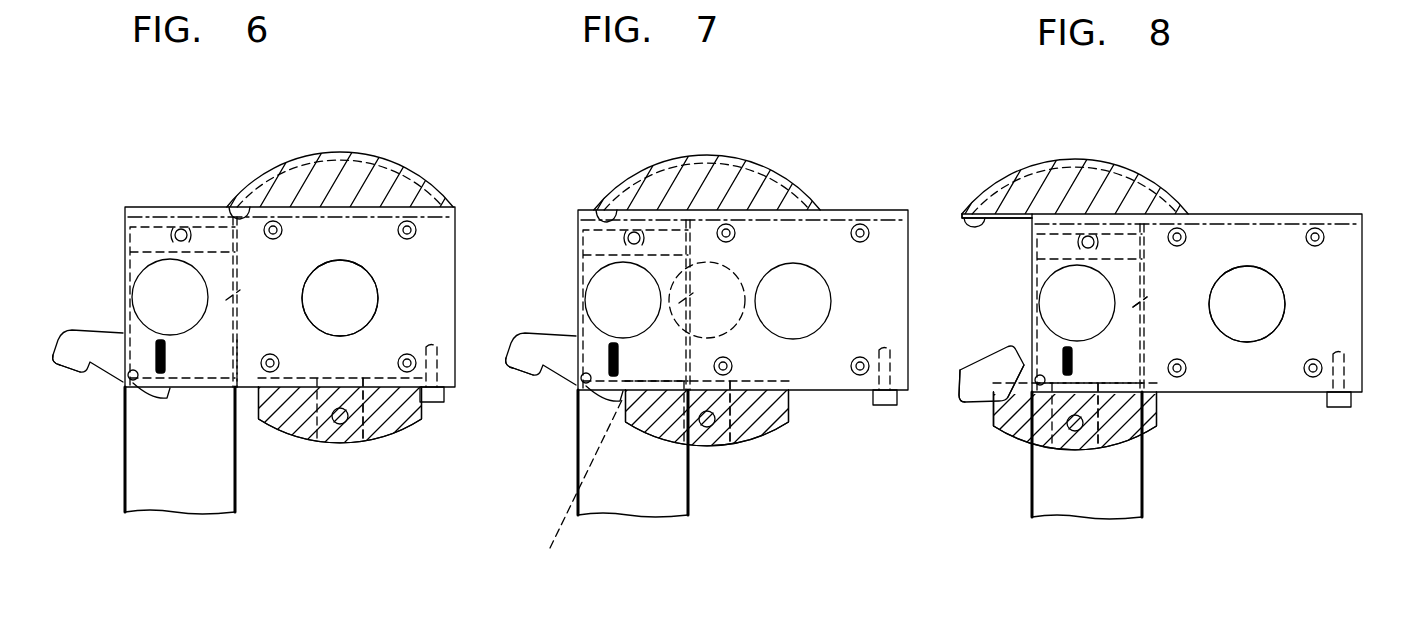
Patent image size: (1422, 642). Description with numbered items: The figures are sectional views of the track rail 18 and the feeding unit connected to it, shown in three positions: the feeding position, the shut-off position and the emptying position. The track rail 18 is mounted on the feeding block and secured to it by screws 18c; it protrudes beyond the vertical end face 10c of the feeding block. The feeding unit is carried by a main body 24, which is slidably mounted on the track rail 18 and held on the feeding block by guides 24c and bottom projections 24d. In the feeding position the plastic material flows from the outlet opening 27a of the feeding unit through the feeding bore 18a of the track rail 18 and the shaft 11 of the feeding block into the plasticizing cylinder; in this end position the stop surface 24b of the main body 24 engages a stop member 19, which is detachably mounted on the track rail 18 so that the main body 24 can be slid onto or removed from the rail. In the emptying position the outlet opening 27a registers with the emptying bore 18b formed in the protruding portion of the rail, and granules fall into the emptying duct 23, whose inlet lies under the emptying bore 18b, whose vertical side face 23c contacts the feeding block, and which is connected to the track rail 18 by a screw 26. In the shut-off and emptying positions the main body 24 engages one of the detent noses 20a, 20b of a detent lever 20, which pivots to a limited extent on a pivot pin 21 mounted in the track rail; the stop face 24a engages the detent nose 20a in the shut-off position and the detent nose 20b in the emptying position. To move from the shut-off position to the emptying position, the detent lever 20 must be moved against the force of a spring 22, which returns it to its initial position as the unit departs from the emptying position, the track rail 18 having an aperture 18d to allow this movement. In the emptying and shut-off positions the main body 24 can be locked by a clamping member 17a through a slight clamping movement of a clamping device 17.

In FIG. 8, the vertical end face 10c is at (1179, 325).
In FIG. 6, the shaft 11 is at (338, 295).
In FIG. 8, the shaft 11 is at (1257, 239).
In FIG. 6, the clamping device 17 is at (335, 424).
In FIG. 7, the clamping device 17 is at (708, 468).
In FIG. 8, the clamping device 17 is at (1061, 494).
In FIG. 6, the clamping member 17a is at (356, 444).
In FIG. 7, the clamping member 17a is at (740, 444).
In FIG. 8, the clamping member 17a is at (1099, 478).
In FIG. 6, the track rail 18 is at (460, 245).
In FIG. 7, the track rail 18 is at (786, 300).
In FIG. 8, the track rail 18 is at (1226, 335).
In FIG. 6, the feeding bore 18a is at (372, 297).
In FIG. 7, the feeding bore 18a is at (793, 301).
In FIG. 8, the feeding bore 18a is at (1312, 304).
In FIG. 6, the emptying bore 18b is at (173, 298).
In FIG. 7, the emptying bore 18b is at (582, 300).
In FIG. 8, the emptying bore 18b is at (1109, 233).
In FIG. 6, the screws 18c is at (413, 226).
In FIG. 7, the screws 18c is at (814, 255).
In FIG. 8, the screws 18c is at (1288, 255).
In FIG. 6, the aperture 18d is at (240, 403).
In FIG. 7, the aperture 18d is at (626, 392).
In FIG. 8, the aperture 18d is at (1142, 308).
In FIG. 6, the stop member 19 is at (438, 404).
In FIG. 7, the stop member 19 is at (870, 413).
In FIG. 8, the stop member 19 is at (1352, 408).
In FIG. 6, the detent lever 20 is at (68, 362).
In FIG. 7, the detent lever 20 is at (524, 387).
In FIG. 8, the detent lever 20 is at (954, 401).
In FIG. 6, the detent nose 20a is at (172, 396).
In FIG. 7, the detent nose 20a is at (632, 429).
In FIG. 8, the detent nose 20a is at (1110, 443).
In FIG. 6, the detent nose 20b is at (102, 377).
In FIG. 7, the detent nose 20b is at (529, 420).
In FIG. 8, the detent nose 20b is at (935, 451).
In FIG. 6, the pivot pin 21 is at (135, 381).
In FIG. 7, the pivot pin 21 is at (558, 445).
In FIG. 8, the pivot pin 21 is at (1011, 447).
In FIG. 6, the spring 22 is at (166, 356).
In FIG. 7, the spring 22 is at (644, 357).
In FIG. 8, the spring 22 is at (1099, 355).
In FIG. 6, the emptying duct 23 is at (147, 490).
In FIG. 7, the emptying duct 23 is at (633, 488).
In FIG. 8, the emptying duct 23 is at (1103, 497).
In FIG. 6, the vertical side face 23c is at (248, 298).
In FIG. 7, the vertical side face 23c is at (735, 329).
In FIG. 8, the vertical side face 23c is at (1176, 283).
In FIG. 6, the main body 24 is at (375, 157).
In FIG. 7, the main body 24 is at (709, 276).
In FIG. 8, the main body 24 is at (1082, 295).
In FIG. 6, the stop face 24a is at (238, 360).
In FIG. 7, the stop face 24a is at (570, 490).
In FIG. 8, the stop face 24a is at (978, 437).
In FIG. 6, the stop surface 24b is at (425, 412).
In FIG. 7, the stop surface 24b is at (731, 434).
In FIG. 8, the stop surface 24b is at (1121, 435).
In FIG. 6, the guide 24c is at (234, 213).
In FIG. 7, the guide 24c is at (570, 184).
In FIG. 8, the guide 24c is at (955, 188).
In FIG. 8, the bottom projections 24d is at (997, 164).
In FIG. 6, the screw 26 is at (181, 229).
In FIG. 7, the screw 26 is at (616, 189).
In FIG. 8, the screw 26 is at (1104, 182).
In FIG. 7, the outlet opening 27a is at (760, 230).